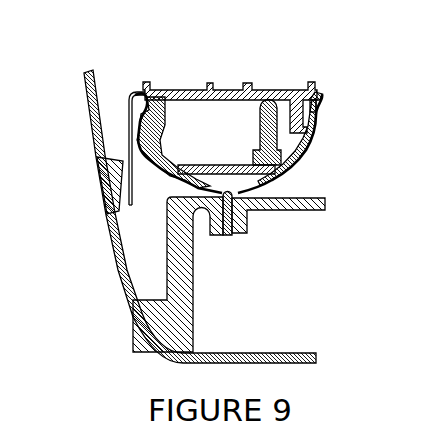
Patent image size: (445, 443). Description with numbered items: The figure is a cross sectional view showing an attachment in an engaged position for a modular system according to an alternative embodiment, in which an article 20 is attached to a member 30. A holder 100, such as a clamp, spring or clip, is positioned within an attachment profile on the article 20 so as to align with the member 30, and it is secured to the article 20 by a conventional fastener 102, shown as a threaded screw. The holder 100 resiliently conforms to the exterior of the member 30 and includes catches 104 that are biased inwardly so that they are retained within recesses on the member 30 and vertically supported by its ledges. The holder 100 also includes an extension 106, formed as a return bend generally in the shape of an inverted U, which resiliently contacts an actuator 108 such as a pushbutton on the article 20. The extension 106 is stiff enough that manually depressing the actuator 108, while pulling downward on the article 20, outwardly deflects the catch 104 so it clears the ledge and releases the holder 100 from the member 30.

The holder 100 is at (218, 201).
The article 20 is at (121, 284).
The member 30 is at (314, 90).
The fastener 102 is at (252, 185).
The catch 104 is at (136, 97).
The extension 106 is at (128, 137).
The actuator 108 is at (104, 214).